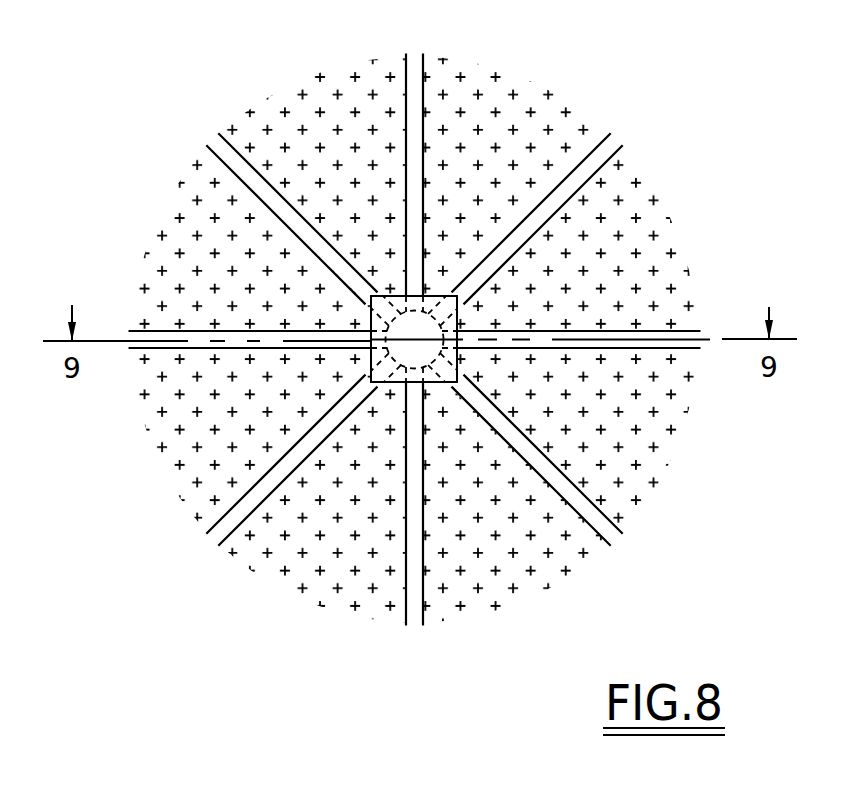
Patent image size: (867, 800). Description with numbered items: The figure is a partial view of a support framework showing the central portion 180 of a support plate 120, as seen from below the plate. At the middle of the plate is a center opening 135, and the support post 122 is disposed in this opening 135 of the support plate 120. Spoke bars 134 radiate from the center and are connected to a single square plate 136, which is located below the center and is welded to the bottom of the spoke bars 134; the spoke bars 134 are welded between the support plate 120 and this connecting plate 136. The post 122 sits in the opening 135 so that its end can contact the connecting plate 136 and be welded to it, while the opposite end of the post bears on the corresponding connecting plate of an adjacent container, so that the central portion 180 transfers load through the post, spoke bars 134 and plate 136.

The support plate 120 is at (243, 76).
The support post 122 is at (390, 350).
The spoke bars 134 is at (604, 513).
The center opening 135 is at (427, 333).
The square plate 136 is at (458, 314).
The central portion 180 is at (628, 101).